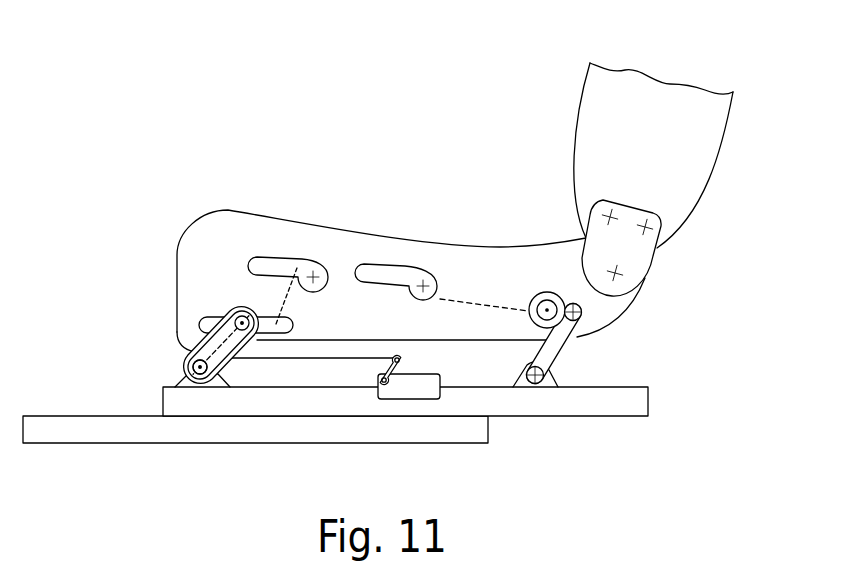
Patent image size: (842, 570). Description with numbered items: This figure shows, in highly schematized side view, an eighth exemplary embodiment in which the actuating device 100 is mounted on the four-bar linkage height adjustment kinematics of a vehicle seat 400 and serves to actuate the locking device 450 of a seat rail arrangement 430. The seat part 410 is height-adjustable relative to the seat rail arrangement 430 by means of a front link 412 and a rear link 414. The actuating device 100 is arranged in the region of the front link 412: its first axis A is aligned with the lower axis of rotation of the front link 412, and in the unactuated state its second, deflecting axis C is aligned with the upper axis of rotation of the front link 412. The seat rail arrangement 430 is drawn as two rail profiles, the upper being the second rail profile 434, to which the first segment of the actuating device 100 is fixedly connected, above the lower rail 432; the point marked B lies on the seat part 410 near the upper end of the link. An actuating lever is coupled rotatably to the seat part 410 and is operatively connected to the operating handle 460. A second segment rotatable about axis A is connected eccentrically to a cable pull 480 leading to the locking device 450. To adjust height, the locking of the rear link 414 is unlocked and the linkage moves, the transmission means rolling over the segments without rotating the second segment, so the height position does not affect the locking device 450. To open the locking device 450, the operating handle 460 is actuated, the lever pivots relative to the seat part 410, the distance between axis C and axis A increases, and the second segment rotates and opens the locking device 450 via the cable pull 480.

The vehicle seat 400 is at (420, 207).
The seat part 410 is at (338, 262).
The operating handle 460 is at (272, 266).
The actuating device 100 is at (185, 349).
The front link 412 is at (233, 372).
The rear link 414 is at (548, 350).
The cable pull 480 is at (308, 360).
The locking device 450 is at (410, 396).
The lower plate 432 is at (458, 432).
The second rail profile 434 is at (635, 398).
The seat rail arrangement 430 is at (381, 447).
The first axis A is at (193, 363).
The pivot point B is at (207, 323).
The second axis C is at (227, 322).